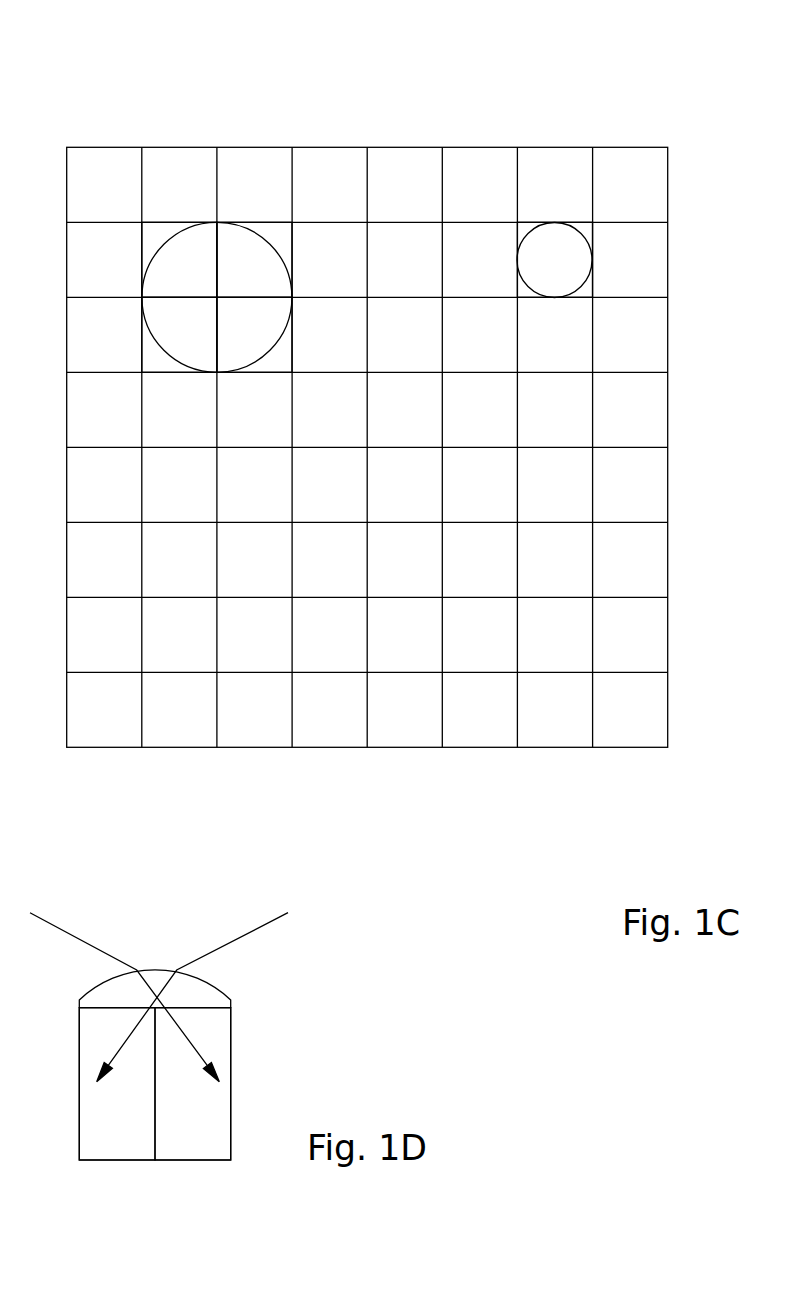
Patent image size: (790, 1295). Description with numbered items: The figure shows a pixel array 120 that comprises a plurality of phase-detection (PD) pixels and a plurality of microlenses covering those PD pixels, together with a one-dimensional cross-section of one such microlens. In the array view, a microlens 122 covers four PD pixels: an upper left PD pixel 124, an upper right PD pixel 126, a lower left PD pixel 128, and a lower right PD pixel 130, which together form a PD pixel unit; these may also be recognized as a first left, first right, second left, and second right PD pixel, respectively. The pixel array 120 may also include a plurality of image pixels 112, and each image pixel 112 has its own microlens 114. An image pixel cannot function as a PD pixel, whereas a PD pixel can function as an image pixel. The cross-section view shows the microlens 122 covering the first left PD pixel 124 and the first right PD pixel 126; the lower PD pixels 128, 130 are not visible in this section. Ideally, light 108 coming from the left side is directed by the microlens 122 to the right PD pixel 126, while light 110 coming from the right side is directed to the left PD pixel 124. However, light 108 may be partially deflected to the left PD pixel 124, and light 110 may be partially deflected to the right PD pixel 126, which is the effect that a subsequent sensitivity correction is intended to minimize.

In FIG. 1C, the pixel array 120 is at (136, 72).
In FIG. 1C, the microlens 122 is at (273, 246).
In FIG. 1D, the microlens 122 is at (220, 988).
In FIG. 1C, the upper left PD pixel 124 is at (205, 281).
In FIG. 1D, the upper left PD pixel 124 is at (142, 1135).
In FIG. 1C, the upper right PD pixel 126 is at (270, 281).
In FIG. 1D, the upper right PD pixel 126 is at (214, 1135).
In FIG. 1C, the lower left PD pixel 128 is at (205, 339).
In FIG. 1C, the lower right PD pixel 130 is at (270, 339).
In FIG. 1C, the image pixel 112 is at (575, 271).
In FIG. 1C, the microlens 114 is at (580, 232).
In FIG. 1D, the light 108 is at (60, 929).
In FIG. 1D, the light 110 is at (258, 930).